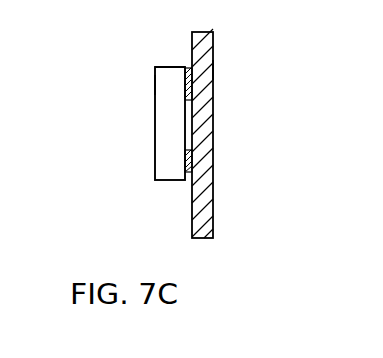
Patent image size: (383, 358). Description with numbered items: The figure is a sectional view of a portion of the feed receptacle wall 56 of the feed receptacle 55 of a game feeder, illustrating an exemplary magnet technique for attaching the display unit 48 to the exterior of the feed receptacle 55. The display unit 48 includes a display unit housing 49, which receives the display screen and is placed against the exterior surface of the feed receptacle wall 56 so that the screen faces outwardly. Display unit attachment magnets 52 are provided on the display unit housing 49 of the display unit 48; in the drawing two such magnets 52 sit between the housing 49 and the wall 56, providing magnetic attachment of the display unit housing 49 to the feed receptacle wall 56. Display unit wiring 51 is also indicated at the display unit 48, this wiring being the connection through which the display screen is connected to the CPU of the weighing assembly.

The display unit 48 is at (154, 67).
The display unit housing 49 is at (156, 85).
The display unit wiring 51 is at (165, 66).
The display unit attachment magnets 52 is at (186, 68).
The feed receptacle 55 is at (214, 43).
The feed receptacle wall 56 is at (207, 68).